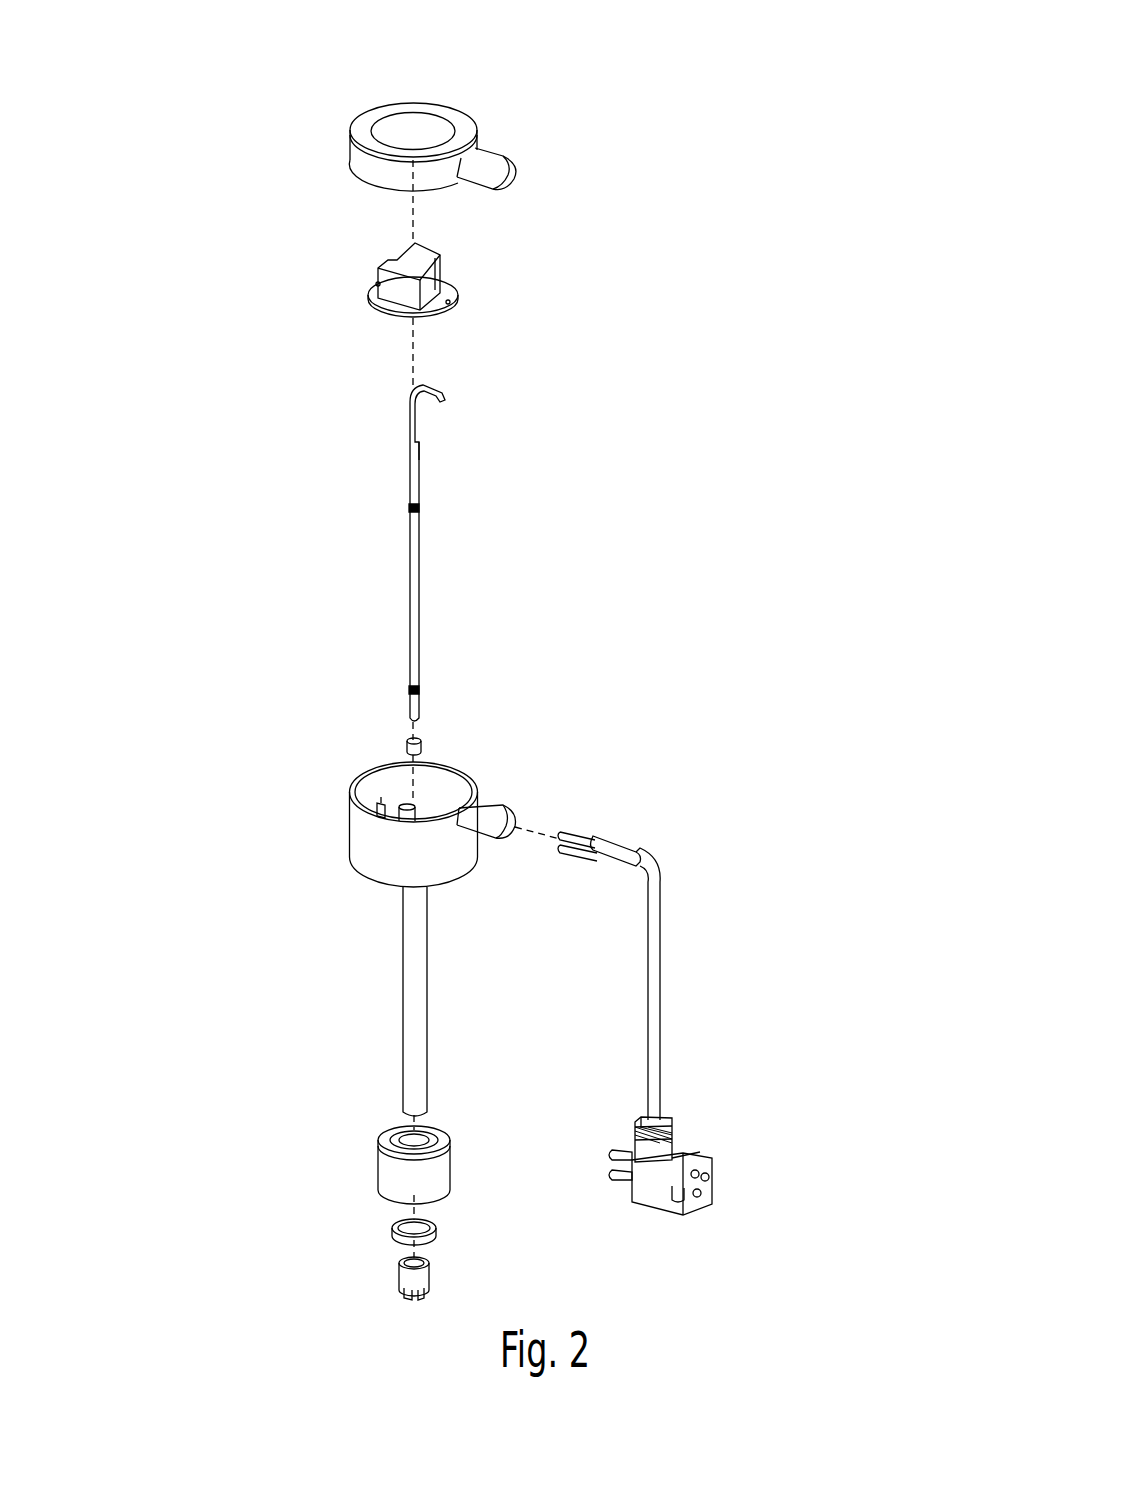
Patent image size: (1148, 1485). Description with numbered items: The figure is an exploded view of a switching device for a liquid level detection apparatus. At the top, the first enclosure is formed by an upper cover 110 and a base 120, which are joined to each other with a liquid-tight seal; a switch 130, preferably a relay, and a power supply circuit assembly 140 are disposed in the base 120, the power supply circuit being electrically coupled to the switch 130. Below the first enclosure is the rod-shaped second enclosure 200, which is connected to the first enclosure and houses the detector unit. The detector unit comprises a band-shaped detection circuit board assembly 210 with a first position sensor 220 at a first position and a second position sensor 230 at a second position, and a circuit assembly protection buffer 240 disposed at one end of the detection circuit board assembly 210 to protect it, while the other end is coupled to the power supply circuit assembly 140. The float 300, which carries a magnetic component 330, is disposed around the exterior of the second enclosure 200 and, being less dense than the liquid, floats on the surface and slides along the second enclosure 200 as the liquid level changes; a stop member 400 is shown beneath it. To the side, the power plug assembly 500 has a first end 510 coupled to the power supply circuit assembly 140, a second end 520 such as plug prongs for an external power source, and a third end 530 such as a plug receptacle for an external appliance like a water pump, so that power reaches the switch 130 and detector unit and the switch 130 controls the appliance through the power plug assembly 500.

The upper cover 110 is at (576, 104).
The switch 130 is at (590, 216).
The power supply circuit assembly 140 is at (585, 272).
The detection circuit board assembly 210 is at (606, 526).
The second position sensor 230 is at (607, 489).
The first position sensor 220 is at (805, 523).
The circuit assembly protection buffer 240 is at (605, 680).
The base 120 is at (577, 796).
The second enclosure 200 is at (311, 963).
The float 300 is at (323, 1059).
The magnetic component 330 is at (316, 1157).
The stop member 400 is at (312, 1250).
The first end 510 is at (680, 828).
The power plug assembly 500 is at (719, 984).
The third end 530 is at (719, 1108).
The second end 520 is at (706, 1196).